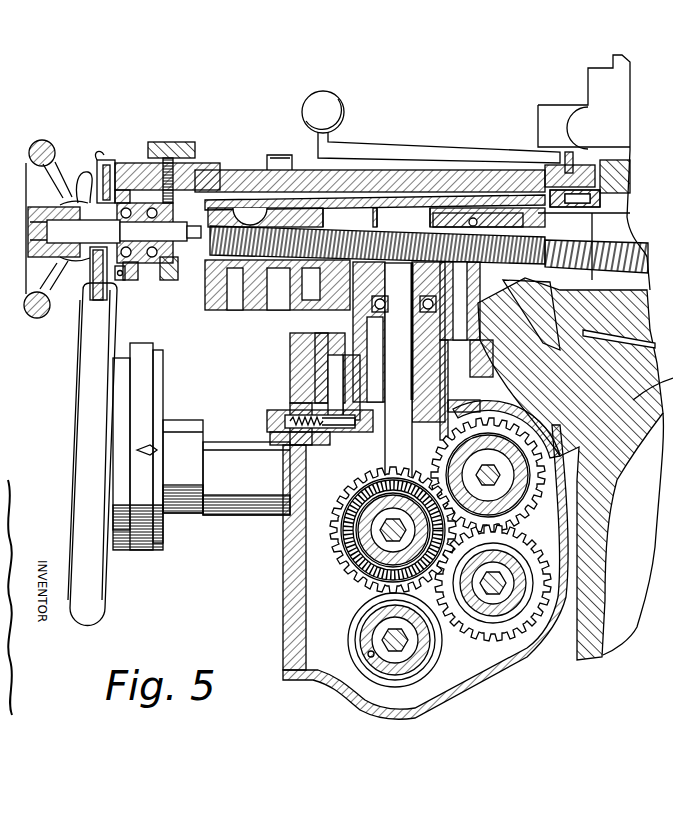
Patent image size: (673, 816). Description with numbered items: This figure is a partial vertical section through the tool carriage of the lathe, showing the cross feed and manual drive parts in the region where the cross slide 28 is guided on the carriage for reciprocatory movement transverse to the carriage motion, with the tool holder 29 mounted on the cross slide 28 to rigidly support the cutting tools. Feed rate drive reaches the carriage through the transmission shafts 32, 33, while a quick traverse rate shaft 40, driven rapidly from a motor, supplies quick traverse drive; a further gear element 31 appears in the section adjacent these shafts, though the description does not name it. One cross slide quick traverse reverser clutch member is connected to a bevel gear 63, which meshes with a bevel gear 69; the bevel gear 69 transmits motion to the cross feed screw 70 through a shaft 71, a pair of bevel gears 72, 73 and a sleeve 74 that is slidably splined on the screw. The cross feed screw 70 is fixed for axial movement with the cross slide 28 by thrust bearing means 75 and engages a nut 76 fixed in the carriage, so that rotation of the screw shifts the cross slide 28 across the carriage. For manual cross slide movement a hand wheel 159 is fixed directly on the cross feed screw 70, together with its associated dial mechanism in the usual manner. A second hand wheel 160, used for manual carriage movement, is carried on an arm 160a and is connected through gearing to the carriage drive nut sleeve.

The cross slide 28 is at (243, 180).
The tool holder 29 is at (592, 88).
The gear 31 is at (500, 474).
The transmission shaft 32 is at (348, 530).
The transmission shaft 33 is at (505, 583).
The quick traverse rate shaft 40 is at (396, 660).
The bevel gear 63 is at (390, 527).
The bevel gear 69 is at (345, 468).
The cross feed screw 70 is at (240, 302).
The shaft 71 is at (395, 358).
The bevel gear 72 is at (302, 340).
The bevel gear 73 is at (440, 230).
The sleeve 74 is at (490, 240).
The thrust bearing means 75 is at (142, 276).
The nut 76 is at (224, 222).
The hand wheel 159 is at (40, 318).
The hand wheel 160 is at (86, 367).
The arm 160a is at (207, 493).